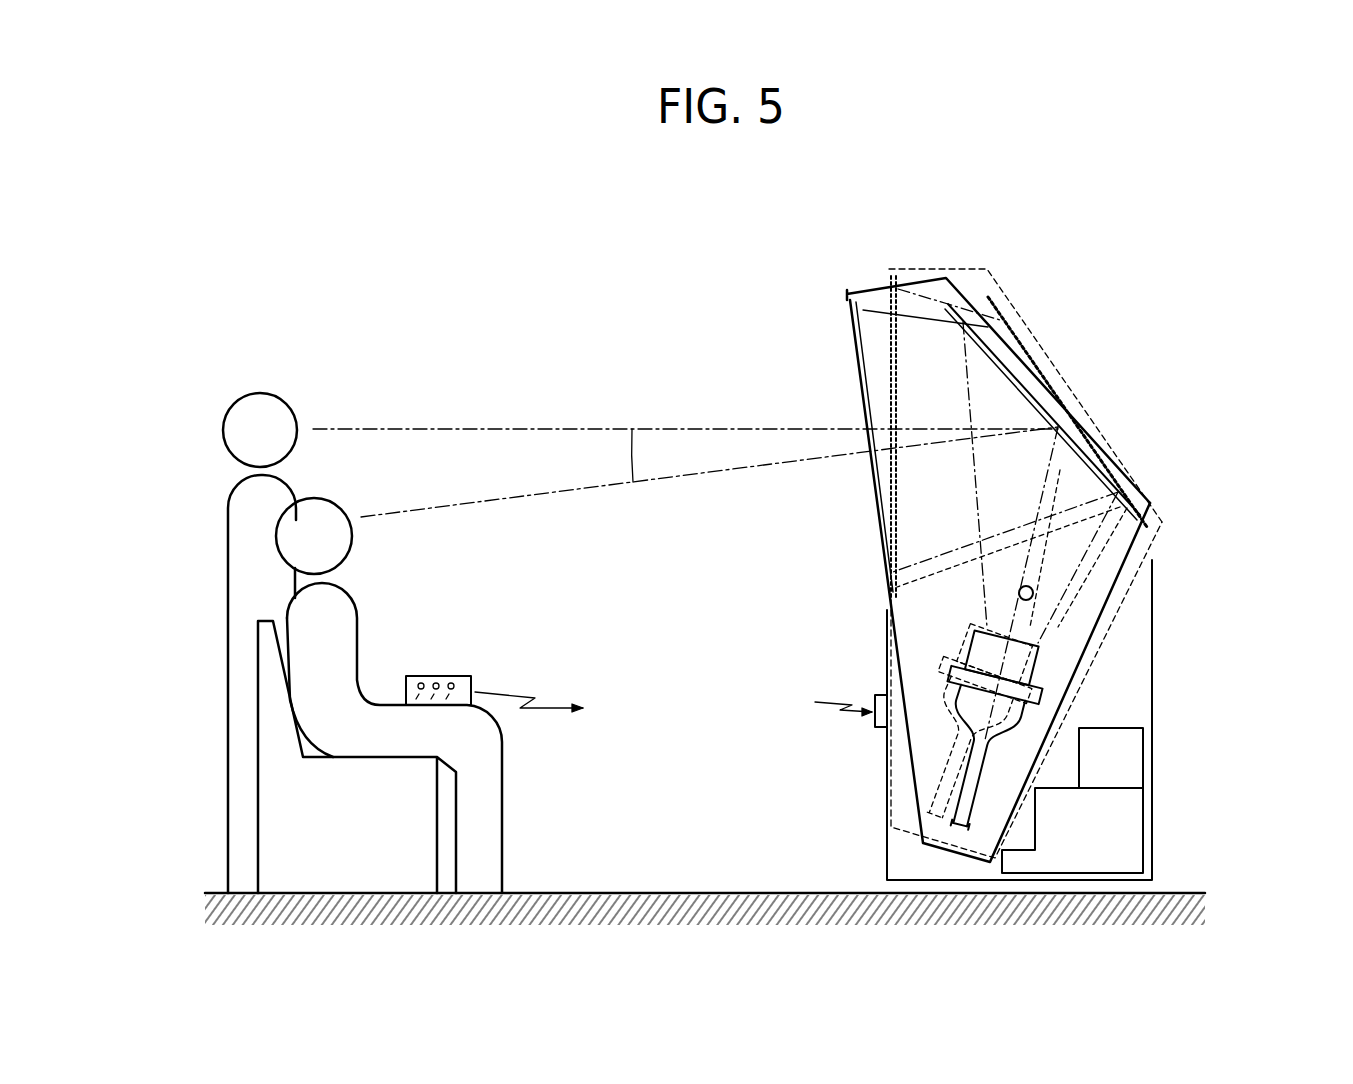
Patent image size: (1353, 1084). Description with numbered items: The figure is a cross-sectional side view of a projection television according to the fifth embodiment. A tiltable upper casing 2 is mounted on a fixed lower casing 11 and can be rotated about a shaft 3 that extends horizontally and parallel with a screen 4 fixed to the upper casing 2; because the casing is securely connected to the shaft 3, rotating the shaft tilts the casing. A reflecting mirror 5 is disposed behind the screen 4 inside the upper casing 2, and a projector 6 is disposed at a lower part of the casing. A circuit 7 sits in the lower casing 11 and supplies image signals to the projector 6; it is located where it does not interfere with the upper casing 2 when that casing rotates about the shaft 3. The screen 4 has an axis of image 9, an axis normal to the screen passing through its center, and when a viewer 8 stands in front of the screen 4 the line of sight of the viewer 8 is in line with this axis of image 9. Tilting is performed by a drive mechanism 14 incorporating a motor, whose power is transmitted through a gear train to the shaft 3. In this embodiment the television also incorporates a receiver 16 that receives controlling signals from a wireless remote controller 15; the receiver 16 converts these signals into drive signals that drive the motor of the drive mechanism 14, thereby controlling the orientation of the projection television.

The upper casing 2 is at (872, 285).
The shaft 3 is at (1034, 589).
The screen 4 is at (889, 327).
The reflecting mirror 5 is at (990, 350).
The projector 6 is at (940, 690).
The circuit 7 is at (1143, 840).
The viewer 8 is at (290, 400).
The axis of image 9 is at (512, 498).
The lower casing 11 is at (885, 845).
The drive mechanism 14 is at (1143, 752).
The wireless remote controller 15 is at (456, 676).
The receiver 16 is at (873, 718).